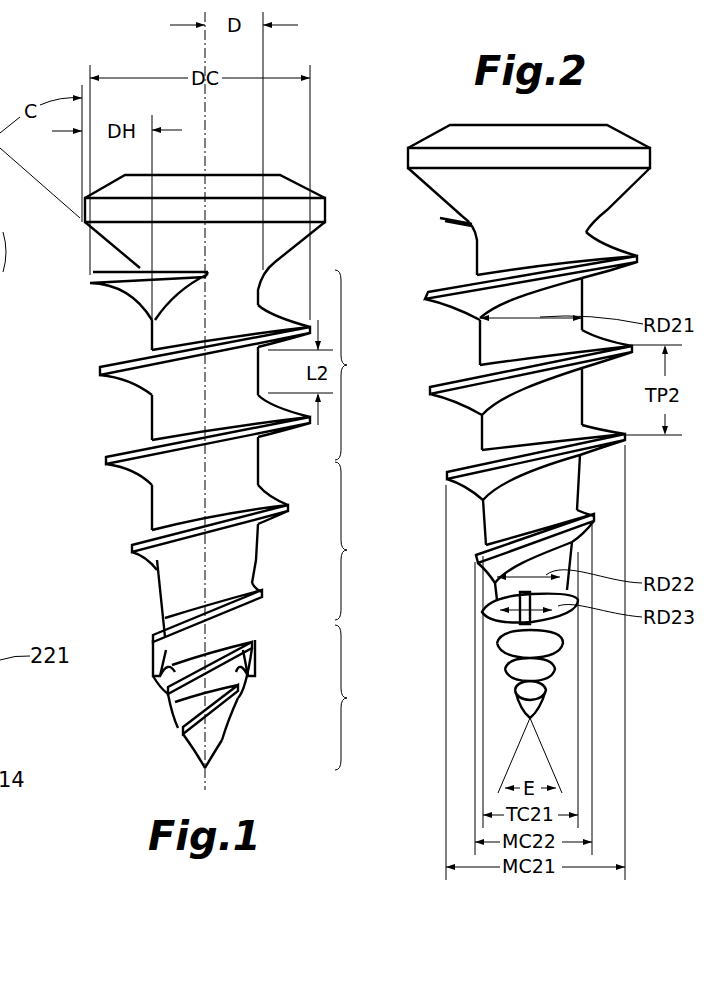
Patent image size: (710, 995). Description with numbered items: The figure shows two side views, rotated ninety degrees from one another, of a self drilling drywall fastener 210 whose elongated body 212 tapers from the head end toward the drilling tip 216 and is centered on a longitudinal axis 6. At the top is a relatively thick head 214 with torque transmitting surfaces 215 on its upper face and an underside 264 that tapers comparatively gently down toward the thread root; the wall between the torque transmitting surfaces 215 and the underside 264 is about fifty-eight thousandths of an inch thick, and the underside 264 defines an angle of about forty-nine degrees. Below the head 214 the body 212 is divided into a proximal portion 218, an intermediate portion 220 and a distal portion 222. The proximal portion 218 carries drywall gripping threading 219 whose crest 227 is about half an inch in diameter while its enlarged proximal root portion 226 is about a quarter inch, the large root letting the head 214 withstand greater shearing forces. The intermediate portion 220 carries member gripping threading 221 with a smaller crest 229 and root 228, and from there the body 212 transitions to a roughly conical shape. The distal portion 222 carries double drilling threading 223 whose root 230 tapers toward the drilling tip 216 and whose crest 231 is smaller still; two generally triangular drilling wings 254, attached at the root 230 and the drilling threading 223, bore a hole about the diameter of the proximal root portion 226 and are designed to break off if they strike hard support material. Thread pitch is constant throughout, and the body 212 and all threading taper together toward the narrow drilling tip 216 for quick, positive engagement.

In FIG. 1, the axis 6 is at (203, 115).
In FIG. 1, the drywall fastener 210 is at (96, 489).
In FIG. 2, the body 212 is at (480, 433).
In FIG. 1, the head 214 is at (306, 190).
In FIG. 2, the head 214 is at (641, 138).
In FIG. 1, the torque transmitting surfaces 215 is at (206, 172).
In FIG. 2, the torque transmitting surfaces 215 is at (531, 123).
In FIG. 1, the drilling tip 216 is at (204, 768).
In FIG. 1, the proximal portion 218 is at (363, 365).
In FIG. 1, the drywall gripping threading 219 is at (137, 380).
In FIG. 2, the drywall gripping threading 219 is at (456, 312).
In FIG. 1, the intermediate portion 220 is at (363, 541).
In FIG. 1, the member gripping threading 221 is at (158, 583).
In FIG. 1, the distal portion 222 is at (363, 697).
In FIG. 1, the drilling threading 223 is at (240, 689).
In FIG. 2, the drilling threading 223 is at (606, 451).
In FIG. 1, the proximal root portion 226 is at (150, 431).
In FIG. 2, the proximal root portion 226 is at (480, 341).
In FIG. 1, the crest 227 is at (100, 371).
In FIG. 2, the crest 227 is at (425, 296).
In FIG. 1, the root 228 is at (256, 534).
In FIG. 1, the crest 229 is at (133, 549).
In FIG. 1, the root 230 is at (185, 704).
In FIG. 1, the crest 231 is at (182, 731).
In FIG. 1, the drilling wings 254 is at (153, 666).
In FIG. 1, the underside 264 is at (308, 245).